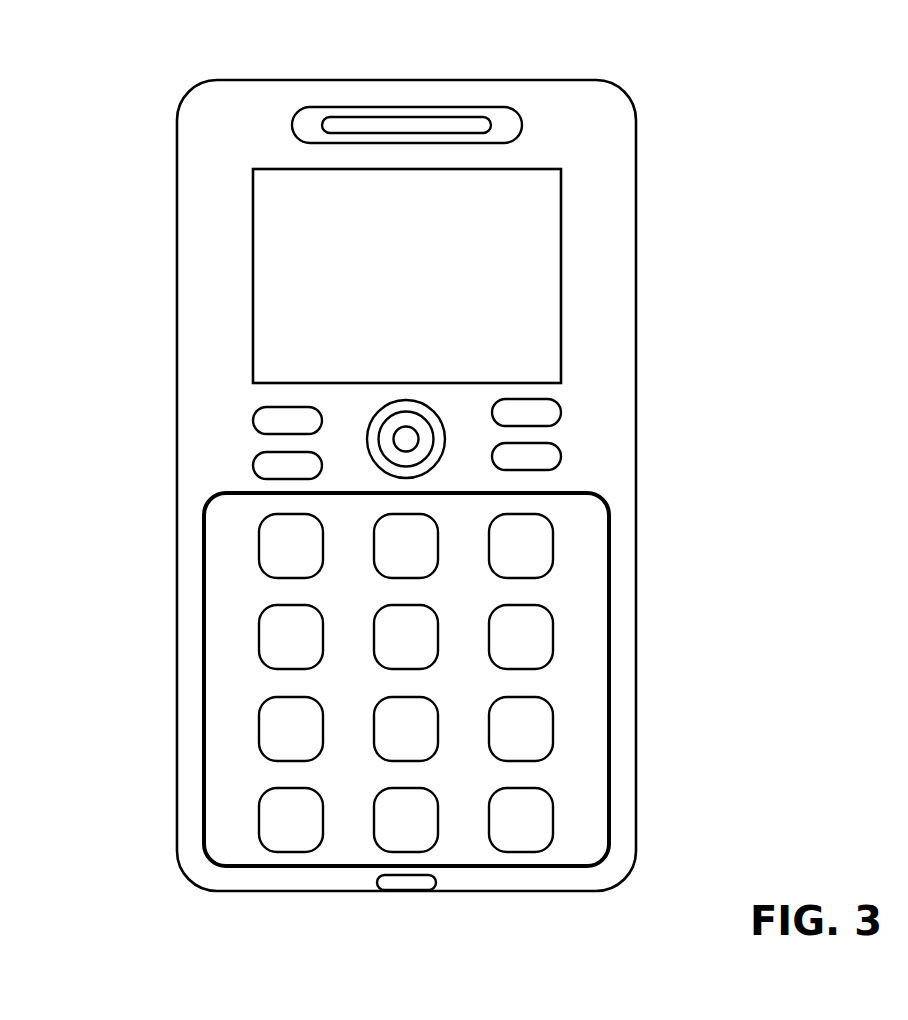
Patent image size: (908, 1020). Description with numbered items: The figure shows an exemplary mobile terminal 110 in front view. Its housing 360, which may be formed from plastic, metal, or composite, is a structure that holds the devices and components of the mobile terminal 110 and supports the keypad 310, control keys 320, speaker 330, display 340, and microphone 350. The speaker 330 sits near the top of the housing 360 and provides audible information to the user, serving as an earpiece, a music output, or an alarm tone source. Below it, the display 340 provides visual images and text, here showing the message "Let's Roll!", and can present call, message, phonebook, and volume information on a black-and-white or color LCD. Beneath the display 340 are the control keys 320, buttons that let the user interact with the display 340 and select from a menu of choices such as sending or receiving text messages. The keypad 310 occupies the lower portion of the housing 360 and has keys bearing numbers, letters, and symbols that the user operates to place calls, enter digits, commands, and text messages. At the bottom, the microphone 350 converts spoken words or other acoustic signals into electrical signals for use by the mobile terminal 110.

The mobile terminal 110 is at (55, 326).
The keypad 310 is at (351, 679).
The control keys 320 is at (658, 385).
The speaker 330 is at (407, 91).
The display 340 is at (436, 276).
The microphone 350 is at (389, 911).
The housing 360 is at (447, 485).